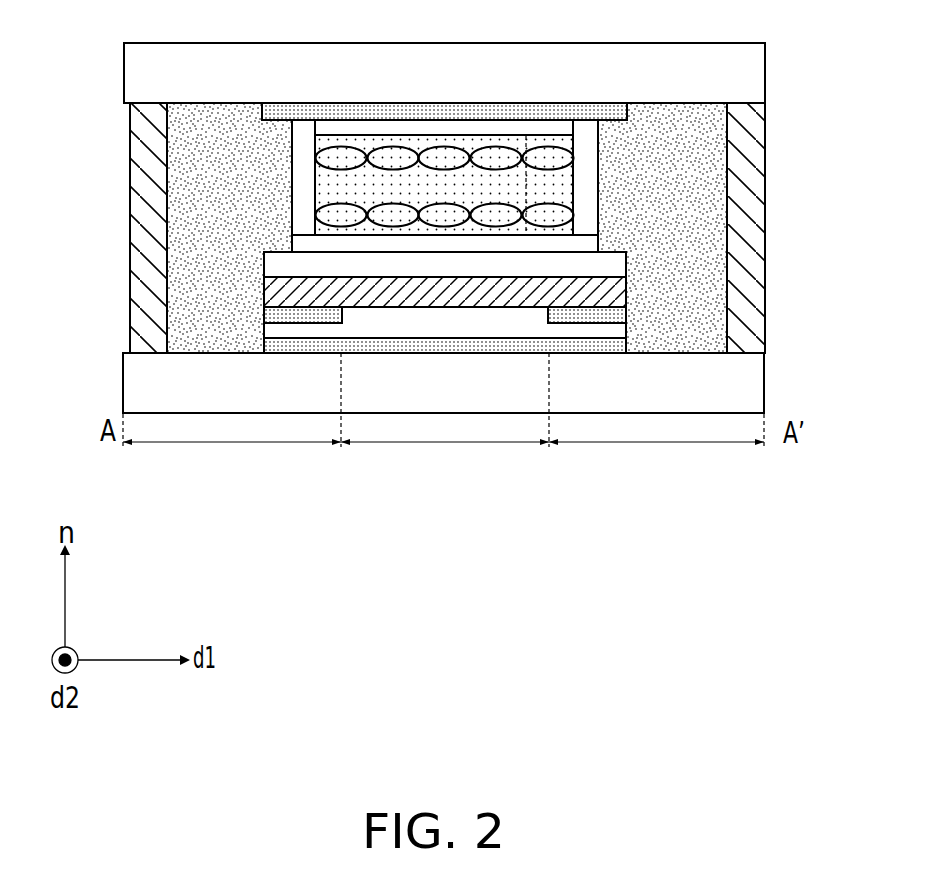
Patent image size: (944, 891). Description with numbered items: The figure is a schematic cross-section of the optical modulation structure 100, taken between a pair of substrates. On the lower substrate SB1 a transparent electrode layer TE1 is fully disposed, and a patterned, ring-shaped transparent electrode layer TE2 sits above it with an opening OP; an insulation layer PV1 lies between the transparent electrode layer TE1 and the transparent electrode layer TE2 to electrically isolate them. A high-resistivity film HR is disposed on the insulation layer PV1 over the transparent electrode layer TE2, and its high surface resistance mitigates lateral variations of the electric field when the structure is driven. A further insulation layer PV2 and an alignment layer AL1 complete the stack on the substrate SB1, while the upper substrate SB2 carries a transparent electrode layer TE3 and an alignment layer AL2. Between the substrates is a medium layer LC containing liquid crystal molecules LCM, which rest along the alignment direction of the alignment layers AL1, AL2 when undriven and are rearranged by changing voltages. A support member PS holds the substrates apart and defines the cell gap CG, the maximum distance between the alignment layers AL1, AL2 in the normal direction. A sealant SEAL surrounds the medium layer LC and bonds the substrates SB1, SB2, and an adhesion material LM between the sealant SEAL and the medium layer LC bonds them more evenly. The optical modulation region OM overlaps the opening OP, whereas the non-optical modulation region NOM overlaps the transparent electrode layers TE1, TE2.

The optical modulation structure 100 is at (830, 543).
The substrate SB1 is at (745, 390).
The substrate SB2 is at (732, 83).
The sealant SEAL is at (750, 252).
The support member PS is at (592, 152).
The adhesion material LM is at (707, 210).
The transparent electrode layer TE3 is at (283, 106).
The alignment layer AL2 is at (328, 128).
The medium layer LC is at (330, 190).
The liquid crystal molecules LCM is at (330, 162).
The cell gap CG is at (543, 185).
The alignment layer AL1 is at (295, 243).
The insulation layer PV2 is at (607, 268).
The high-resistivity film HR is at (607, 297).
The transparent electrode layer TE2 is at (264, 317).
The opening OP is at (342, 317).
The insulation layer PV1 is at (607, 332).
The transparent electrode layer TE1 is at (264, 347).
The non-optical modulation region NOM is at (443, 463).
The optical modulation region OM is at (445, 461).